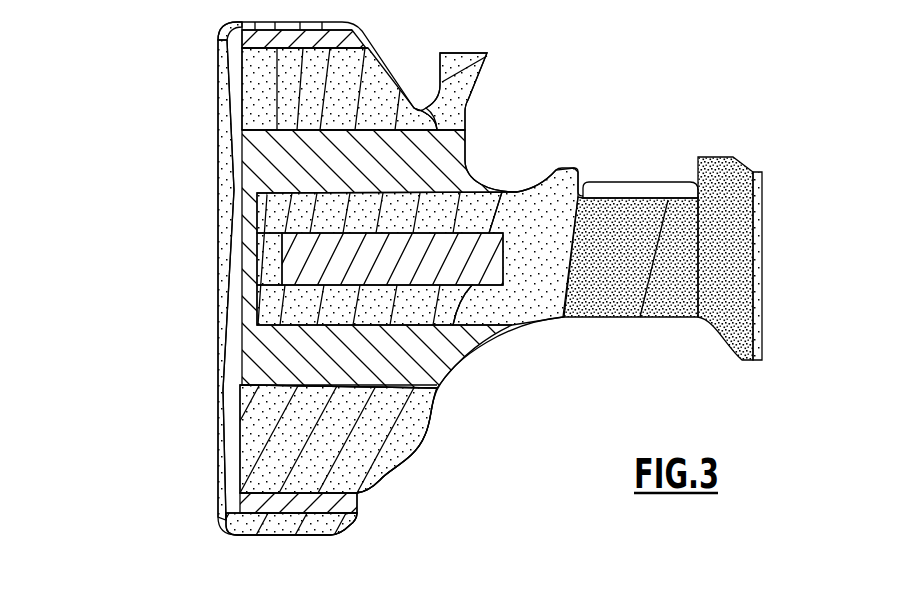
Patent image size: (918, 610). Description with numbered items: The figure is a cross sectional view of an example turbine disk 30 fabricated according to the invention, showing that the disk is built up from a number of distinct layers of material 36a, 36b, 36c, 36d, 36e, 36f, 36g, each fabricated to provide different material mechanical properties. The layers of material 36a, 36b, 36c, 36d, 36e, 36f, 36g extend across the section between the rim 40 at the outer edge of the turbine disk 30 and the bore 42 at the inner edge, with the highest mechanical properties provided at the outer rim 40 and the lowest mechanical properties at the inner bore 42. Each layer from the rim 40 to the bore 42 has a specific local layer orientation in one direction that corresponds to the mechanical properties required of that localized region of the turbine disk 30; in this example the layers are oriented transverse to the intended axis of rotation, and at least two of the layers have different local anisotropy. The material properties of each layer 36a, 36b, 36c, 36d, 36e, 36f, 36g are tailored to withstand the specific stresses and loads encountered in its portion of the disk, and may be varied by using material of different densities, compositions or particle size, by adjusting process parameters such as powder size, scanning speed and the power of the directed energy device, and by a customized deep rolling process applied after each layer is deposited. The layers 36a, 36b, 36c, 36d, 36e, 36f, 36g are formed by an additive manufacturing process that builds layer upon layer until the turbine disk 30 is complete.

The turbine disk 30 is at (117, 463).
The bore 42 is at (203, 265).
The rim 40 is at (776, 251).
The layer of material 36a is at (347, 523).
The layer of material 36b is at (357, 498).
The layer of material 36c is at (457, 392).
The layer of material 36d is at (485, 366).
The layer of material 36e is at (736, 172).
The layer of material 36f is at (633, 183).
The layer of material 36g is at (528, 213).